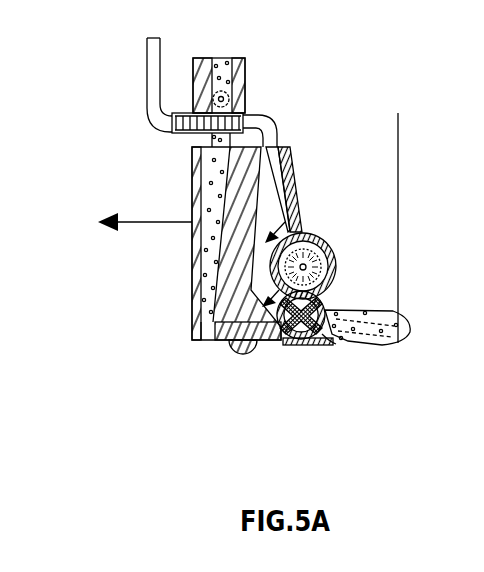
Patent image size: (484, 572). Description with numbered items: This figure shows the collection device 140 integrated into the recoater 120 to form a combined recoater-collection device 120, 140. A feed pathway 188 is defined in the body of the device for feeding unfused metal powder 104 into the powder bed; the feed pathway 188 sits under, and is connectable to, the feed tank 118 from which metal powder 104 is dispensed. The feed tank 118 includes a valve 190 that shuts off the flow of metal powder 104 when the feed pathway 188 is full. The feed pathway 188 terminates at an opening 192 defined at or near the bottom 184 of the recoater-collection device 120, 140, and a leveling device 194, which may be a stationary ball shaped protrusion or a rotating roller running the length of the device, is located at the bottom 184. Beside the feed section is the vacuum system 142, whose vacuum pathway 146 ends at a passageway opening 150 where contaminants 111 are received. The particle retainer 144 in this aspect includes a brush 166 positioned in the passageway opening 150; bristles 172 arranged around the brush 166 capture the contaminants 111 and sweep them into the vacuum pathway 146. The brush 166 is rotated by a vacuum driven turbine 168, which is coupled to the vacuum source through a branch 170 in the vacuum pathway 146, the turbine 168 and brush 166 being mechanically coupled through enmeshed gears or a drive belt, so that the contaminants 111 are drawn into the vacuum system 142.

The feed tank 118 is at (202, 72).
The valve 190 is at (240, 108).
The vacuum system 142 is at (271, 143).
The vacuum pathway 146 is at (268, 194).
The branch 170 is at (303, 232).
The vacuum driven turbine 168 is at (342, 262).
The contaminants 111 is at (397, 322).
The passageway opening 150 is at (335, 345).
The particle retainer 144 is at (331, 338).
The bristles 172 is at (315, 345).
The brush 166 is at (293, 343).
The bottom 184 is at (194, 338).
The opening 192 is at (196, 343).
The leveling device 194 is at (241, 353).
The feed pathway 188 is at (192, 240).
The metal powder 104 is at (192, 272).
The recoater 120 is at (146, 181).
The collection device 140 is at (146, 181).